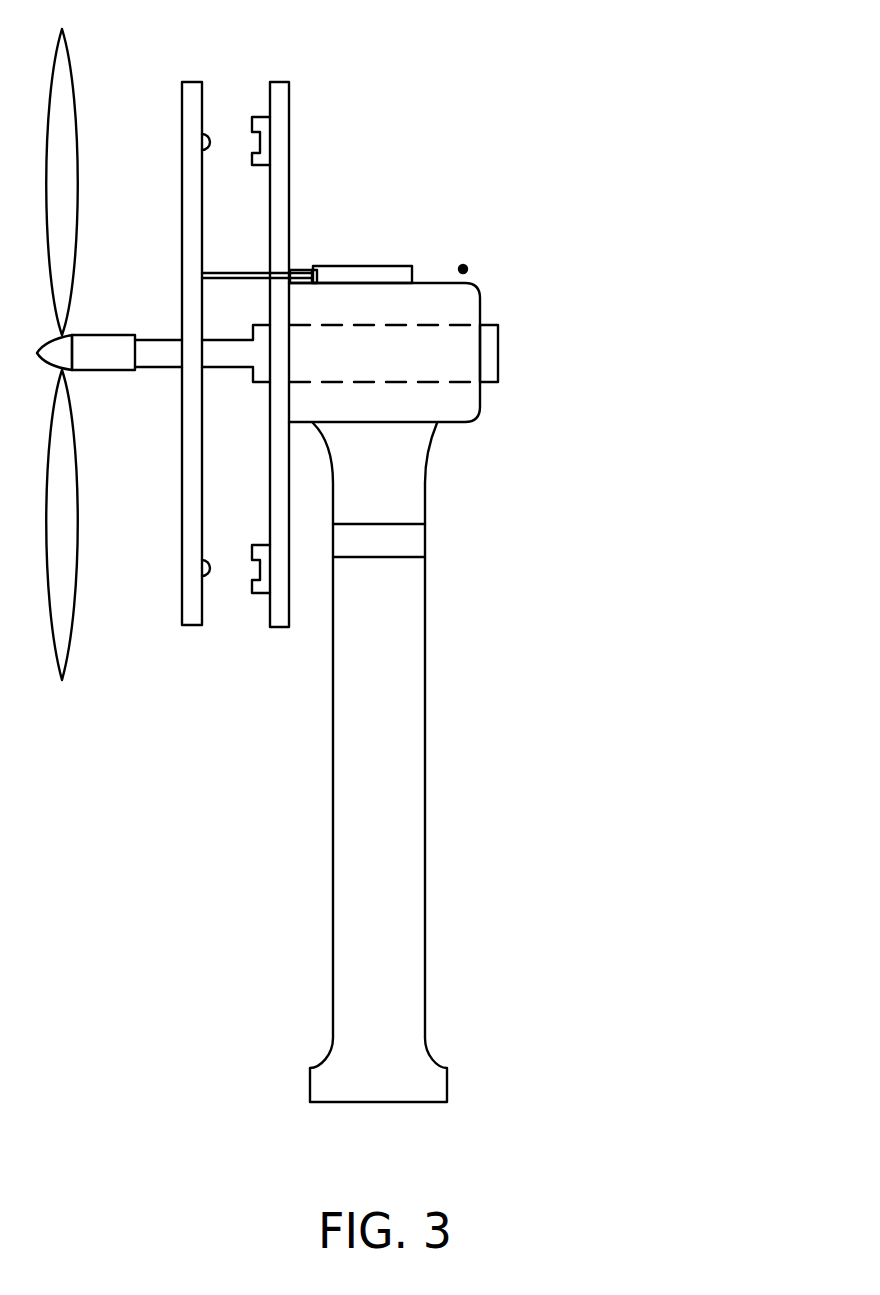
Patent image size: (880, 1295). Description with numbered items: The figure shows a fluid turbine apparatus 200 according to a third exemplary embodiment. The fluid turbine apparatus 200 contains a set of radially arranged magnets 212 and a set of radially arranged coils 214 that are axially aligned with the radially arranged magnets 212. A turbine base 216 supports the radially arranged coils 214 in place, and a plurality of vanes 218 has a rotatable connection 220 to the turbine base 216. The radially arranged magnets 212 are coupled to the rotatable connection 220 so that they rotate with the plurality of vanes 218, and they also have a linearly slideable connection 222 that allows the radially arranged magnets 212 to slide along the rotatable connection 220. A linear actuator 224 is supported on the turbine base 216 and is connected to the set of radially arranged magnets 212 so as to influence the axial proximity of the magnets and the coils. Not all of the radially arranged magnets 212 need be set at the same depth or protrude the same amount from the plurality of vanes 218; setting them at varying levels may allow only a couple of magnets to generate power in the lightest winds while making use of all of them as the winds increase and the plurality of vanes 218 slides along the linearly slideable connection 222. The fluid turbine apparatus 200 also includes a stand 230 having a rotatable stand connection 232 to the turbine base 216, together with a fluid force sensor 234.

The fluid turbine apparatus 200 is at (555, 160).
The radially arranged magnets 212 is at (208, 138).
The radially arranged coils 214 is at (263, 117).
The turbine base 216 is at (472, 409).
The plurality of vanes 218 is at (67, 62).
The rotatable connection 220 is at (258, 358).
The linearly slideable connection 222 is at (177, 372).
The linear actuator 224 is at (393, 280).
The stand 230 is at (412, 624).
The rotatable stand connection 232 is at (420, 540).
The fluid force sensor 234 is at (466, 266).